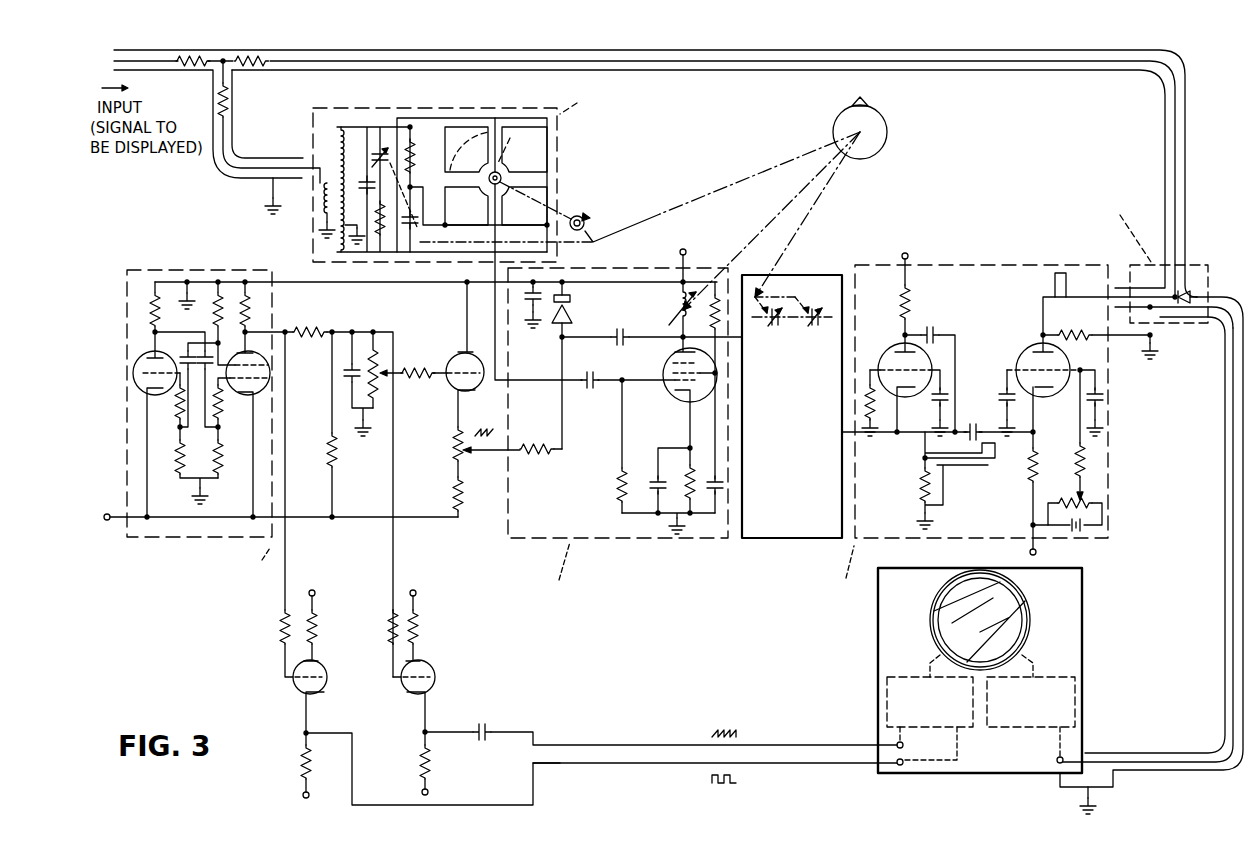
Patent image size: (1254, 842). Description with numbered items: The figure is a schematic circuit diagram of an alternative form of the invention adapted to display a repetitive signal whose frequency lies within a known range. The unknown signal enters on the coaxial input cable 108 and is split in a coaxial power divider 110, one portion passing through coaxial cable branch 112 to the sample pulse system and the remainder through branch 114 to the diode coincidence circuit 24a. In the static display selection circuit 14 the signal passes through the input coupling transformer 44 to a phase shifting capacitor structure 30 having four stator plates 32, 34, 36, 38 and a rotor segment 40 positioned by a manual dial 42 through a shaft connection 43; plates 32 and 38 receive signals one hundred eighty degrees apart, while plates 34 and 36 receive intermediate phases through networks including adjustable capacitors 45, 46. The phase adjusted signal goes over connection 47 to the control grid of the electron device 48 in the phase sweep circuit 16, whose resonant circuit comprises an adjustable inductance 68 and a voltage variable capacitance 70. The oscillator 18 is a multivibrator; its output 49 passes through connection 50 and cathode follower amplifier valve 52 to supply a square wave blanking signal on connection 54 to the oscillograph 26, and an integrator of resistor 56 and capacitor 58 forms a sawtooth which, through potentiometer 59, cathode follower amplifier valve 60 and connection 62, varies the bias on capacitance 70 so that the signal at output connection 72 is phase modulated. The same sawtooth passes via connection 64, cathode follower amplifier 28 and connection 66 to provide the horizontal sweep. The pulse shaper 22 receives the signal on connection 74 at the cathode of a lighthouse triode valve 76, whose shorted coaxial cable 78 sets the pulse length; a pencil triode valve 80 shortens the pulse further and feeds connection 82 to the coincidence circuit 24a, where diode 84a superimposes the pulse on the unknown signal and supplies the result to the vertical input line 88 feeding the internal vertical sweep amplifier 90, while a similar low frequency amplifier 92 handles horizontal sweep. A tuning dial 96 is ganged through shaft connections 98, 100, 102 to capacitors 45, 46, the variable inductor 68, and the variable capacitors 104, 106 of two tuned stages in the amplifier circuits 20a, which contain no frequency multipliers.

The static display selection circuit 14 is at (557, 160).
The phase sweep circuit 16 is at (604, 548).
The oscillator 18 is at (125, 297).
The amplifier circuits 20a is at (799, 276).
The pulse shaper 22 is at (1034, 264).
The diode coincidence circuit 24a is at (1201, 262).
The oscillograph 26 is at (1073, 607).
The cathode follower amplifier 28 is at (433, 665).
The phase shifting capacitor structure 30 is at (530, 130).
The stator plate 32 is at (460, 130).
The stator plate 34 is at (548, 150).
The stator plate 36 is at (466, 206).
The stator plate 38 is at (524, 206).
The rotor segment 40 is at (446, 176).
The manual dial 42 is at (585, 222).
The shaft connection 43 is at (548, 209).
The input coupling transformer 44 is at (327, 183).
The adjustable capacitor 45 is at (377, 163).
The adjustable capacitor 46 is at (408, 229).
The connection 47 is at (494, 272).
The electron device 48 is at (680, 400).
The output 49 is at (249, 332).
The connection 50 is at (282, 558).
The cathode follower amplifier valve 52 is at (295, 687).
The connection 54 is at (790, 763).
The resistor 56 is at (314, 328).
The capacitor 58 is at (347, 371).
The potentiometer 59 is at (379, 393).
The cathode follower amplifier valve 60 is at (455, 357).
The connection 62 is at (530, 456).
The connection 64 is at (393, 556).
The connection 66 is at (790, 745).
The adjustable inductance 68 is at (672, 303).
The voltage variable capacitance 70 is at (556, 326).
The output connection 72 is at (735, 338).
The connection 74 is at (852, 433).
The valve 76 is at (892, 352).
The coaxial cable 78 is at (965, 466).
The valve 80 is at (1025, 352).
The connection 82 is at (1115, 288).
The diode 84a is at (1192, 297).
The vertical oscillograph input line 88 is at (1222, 452).
The internal vertical sweep amplifier 90 is at (1053, 675).
The low frequency amplifier 92 is at (913, 677).
The manual dial 96 is at (887, 133).
The shaft connection 98 is at (682, 205).
The shaft connection 100 is at (782, 212).
The shaft connection 102 is at (820, 196).
The variable capacitor 104 is at (770, 328).
The variable capacitor 106 is at (813, 328).
The coaxial input cable 108 is at (176, 70).
The coaxial power divider 110 is at (223, 61).
The coaxial cable branch 112 is at (226, 124).
The branch 114 is at (352, 50).